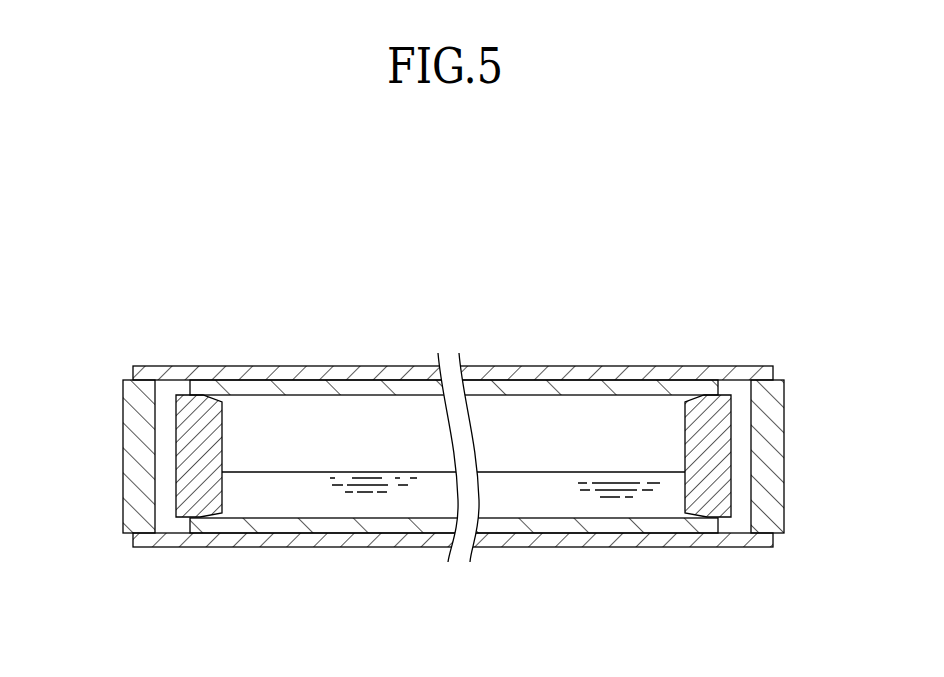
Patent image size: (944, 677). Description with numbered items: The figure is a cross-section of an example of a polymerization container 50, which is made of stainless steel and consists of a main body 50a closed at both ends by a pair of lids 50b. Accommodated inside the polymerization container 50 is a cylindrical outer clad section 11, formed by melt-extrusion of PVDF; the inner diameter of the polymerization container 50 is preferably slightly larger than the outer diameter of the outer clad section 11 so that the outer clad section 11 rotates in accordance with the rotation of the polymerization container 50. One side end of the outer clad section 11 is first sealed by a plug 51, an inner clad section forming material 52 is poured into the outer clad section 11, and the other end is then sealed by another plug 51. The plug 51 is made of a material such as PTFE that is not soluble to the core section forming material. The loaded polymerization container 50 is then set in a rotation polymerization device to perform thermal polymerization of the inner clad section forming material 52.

The polymerization container 50 is at (454, 409).
The main body 50a is at (623, 548).
The lids 50b is at (123, 468).
The outer clad section 11 is at (337, 390).
The plug 51 is at (177, 396).
The inner clad section forming material 52 is at (240, 500).